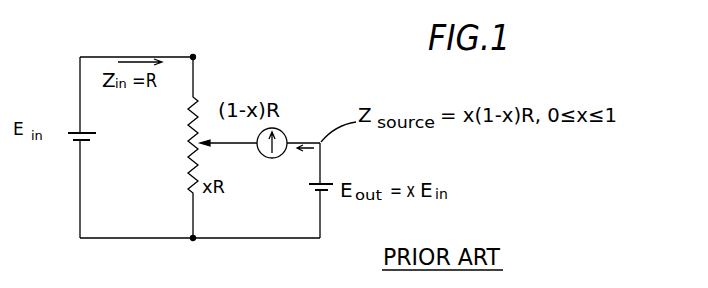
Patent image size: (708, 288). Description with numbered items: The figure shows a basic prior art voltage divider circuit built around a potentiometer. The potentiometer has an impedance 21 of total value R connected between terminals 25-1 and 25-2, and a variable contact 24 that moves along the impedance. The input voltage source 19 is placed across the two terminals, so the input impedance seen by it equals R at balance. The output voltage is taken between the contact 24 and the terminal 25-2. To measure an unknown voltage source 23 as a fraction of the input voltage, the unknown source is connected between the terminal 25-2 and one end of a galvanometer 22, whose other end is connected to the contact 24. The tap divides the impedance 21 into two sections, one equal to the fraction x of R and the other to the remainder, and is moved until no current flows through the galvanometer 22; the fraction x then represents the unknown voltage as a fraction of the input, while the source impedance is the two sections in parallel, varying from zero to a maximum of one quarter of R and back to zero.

The input voltage source 19 is at (76, 140).
The impedance 21 is at (191, 152).
The galvanometer 22 is at (283, 134).
The unknown voltage source 23 is at (317, 187).
The variable contact 24 is at (248, 146).
The terminal 25-1 is at (213, 39).
The terminal 25-2 is at (192, 240).